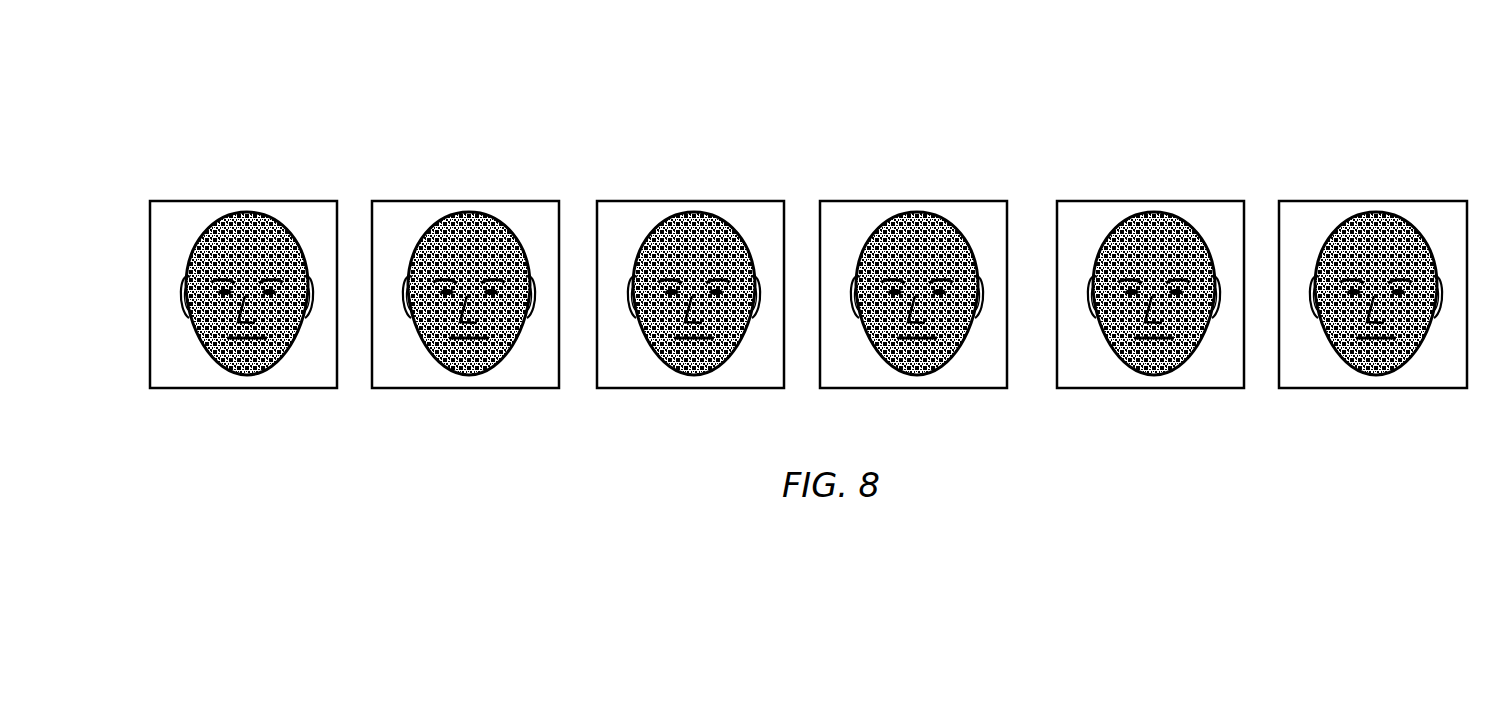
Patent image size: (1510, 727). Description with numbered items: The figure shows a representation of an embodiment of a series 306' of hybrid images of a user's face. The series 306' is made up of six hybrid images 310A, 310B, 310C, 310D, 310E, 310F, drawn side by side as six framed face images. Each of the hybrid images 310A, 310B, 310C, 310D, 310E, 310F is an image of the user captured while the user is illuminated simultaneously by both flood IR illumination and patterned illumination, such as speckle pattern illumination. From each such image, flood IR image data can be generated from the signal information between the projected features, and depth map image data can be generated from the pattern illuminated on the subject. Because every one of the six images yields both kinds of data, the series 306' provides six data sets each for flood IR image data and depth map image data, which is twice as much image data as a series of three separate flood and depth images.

The series of hybrid images 306' is at (783, 211).
The hybrid image 310A is at (288, 201).
The hybrid image 310B is at (510, 201).
The hybrid image 310C is at (735, 201).
The hybrid image 310D is at (958, 201).
The hybrid image 310E is at (1195, 201).
The hybrid image 310F is at (1417, 201).